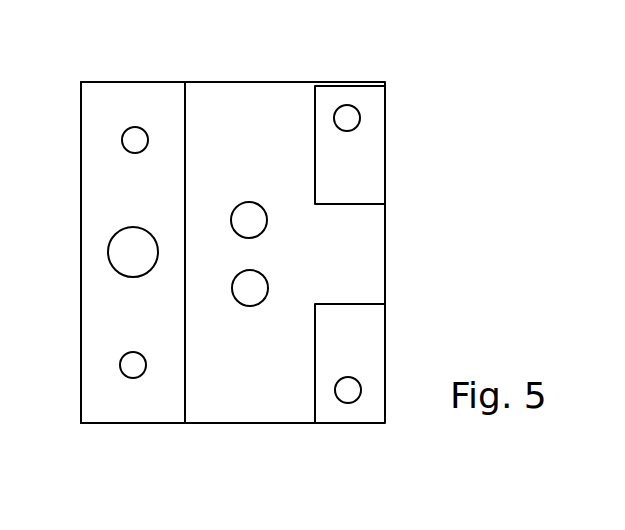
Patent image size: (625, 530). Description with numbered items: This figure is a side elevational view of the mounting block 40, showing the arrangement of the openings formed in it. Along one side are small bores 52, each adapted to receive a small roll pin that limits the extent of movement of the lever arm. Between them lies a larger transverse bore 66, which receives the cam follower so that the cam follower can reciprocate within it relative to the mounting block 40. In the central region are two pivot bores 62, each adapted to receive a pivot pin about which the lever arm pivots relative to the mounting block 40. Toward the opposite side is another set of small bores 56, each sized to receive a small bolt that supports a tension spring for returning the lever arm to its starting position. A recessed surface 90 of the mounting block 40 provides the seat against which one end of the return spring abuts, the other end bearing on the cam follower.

The mounting block 40 is at (387, 177).
The recessed surface 90 is at (105, 287).
The small bores 52 is at (133, 130).
The larger transverse bore 66 is at (120, 243).
The pivot bores 62 is at (248, 203).
The small bores 56 is at (355, 112).